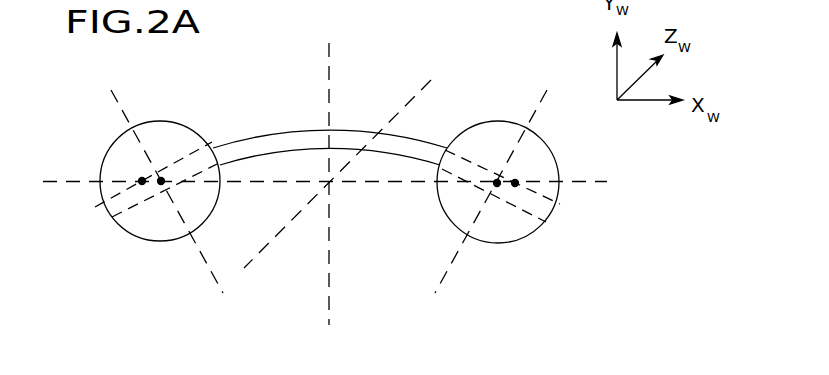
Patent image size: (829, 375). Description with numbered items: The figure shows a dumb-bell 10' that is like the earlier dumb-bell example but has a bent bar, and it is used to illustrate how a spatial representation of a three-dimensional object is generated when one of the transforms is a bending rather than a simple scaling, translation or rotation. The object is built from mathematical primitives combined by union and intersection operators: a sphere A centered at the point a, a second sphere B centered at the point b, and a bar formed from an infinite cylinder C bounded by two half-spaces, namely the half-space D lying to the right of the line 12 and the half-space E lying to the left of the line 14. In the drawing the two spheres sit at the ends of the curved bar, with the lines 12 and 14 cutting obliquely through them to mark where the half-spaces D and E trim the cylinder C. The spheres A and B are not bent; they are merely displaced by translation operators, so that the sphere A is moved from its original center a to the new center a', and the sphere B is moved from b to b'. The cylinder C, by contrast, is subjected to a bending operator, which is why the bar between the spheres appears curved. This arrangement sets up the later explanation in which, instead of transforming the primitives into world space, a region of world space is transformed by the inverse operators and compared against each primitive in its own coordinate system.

The dumb-bell 10' is at (300, 184).
The line 12 is at (205, 258).
The line 14 is at (440, 280).
The sphere A is at (208, 213).
The sphere B is at (469, 213).
The infinite cylinder C is at (298, 142).
The half-space D is at (199, 83).
The half-space E is at (469, 83).
The point a is at (91, 210).
The point a' is at (118, 236).
The point b is at (577, 218).
The point b' is at (542, 236).